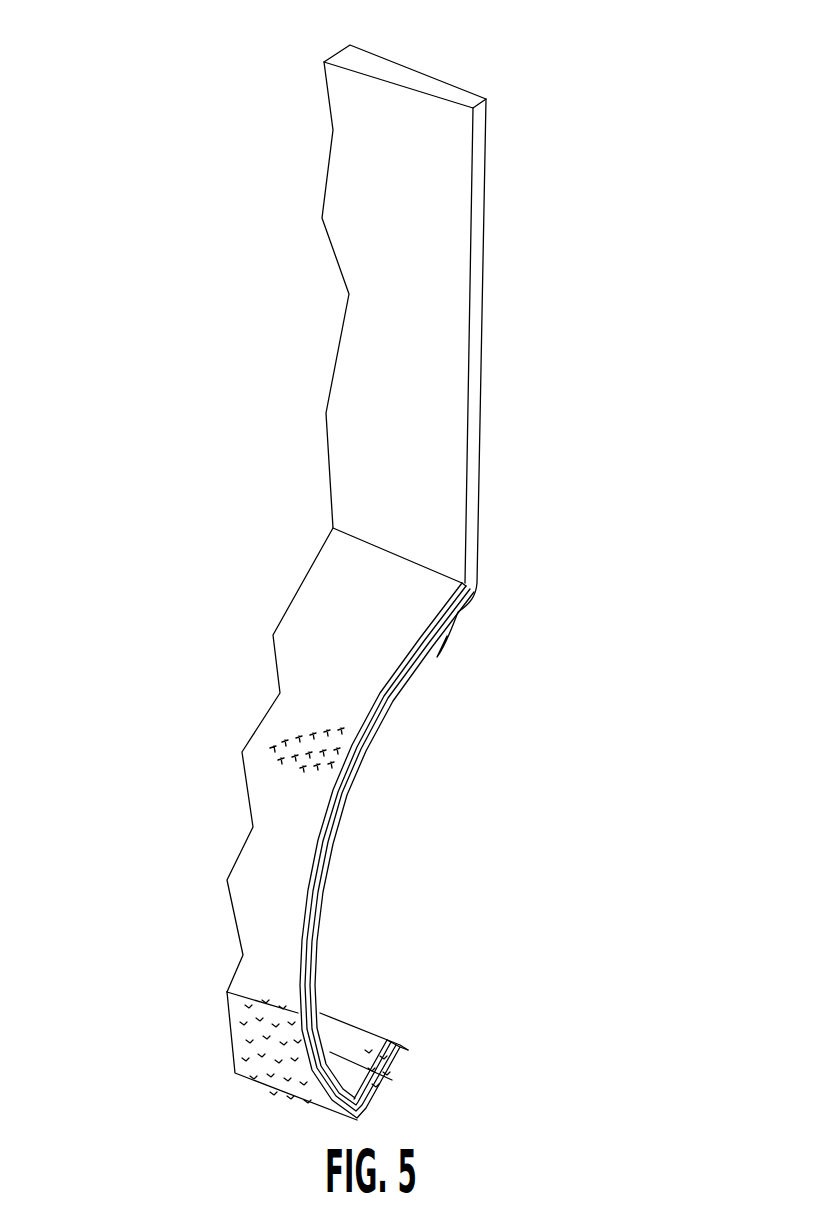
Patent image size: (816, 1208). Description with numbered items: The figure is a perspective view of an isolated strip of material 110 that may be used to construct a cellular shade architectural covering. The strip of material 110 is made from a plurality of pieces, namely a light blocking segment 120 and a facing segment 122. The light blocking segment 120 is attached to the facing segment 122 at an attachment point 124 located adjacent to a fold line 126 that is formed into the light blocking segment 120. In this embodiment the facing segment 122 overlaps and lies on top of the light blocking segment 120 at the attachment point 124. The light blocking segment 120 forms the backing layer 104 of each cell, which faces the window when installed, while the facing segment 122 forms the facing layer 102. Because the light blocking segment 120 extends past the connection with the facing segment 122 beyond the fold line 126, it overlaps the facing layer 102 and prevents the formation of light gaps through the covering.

The strip of material 110 is at (218, 122).
The backing layer 104 is at (583, 312).
The light blocking segment 120 is at (485, 200).
The fold line 126 is at (464, 596).
The attachment point 124 is at (448, 637).
The facing segment 122 is at (258, 760).
The facing layer 102 is at (167, 912).